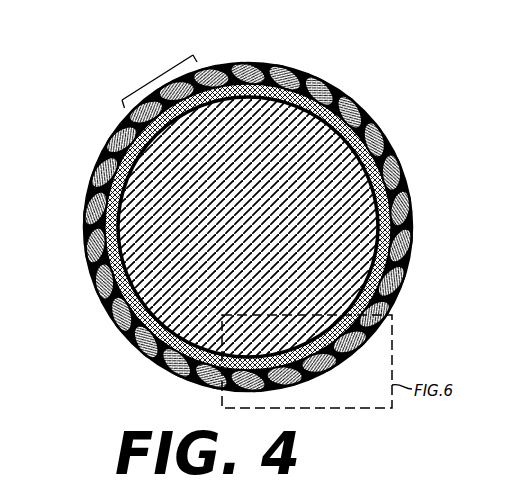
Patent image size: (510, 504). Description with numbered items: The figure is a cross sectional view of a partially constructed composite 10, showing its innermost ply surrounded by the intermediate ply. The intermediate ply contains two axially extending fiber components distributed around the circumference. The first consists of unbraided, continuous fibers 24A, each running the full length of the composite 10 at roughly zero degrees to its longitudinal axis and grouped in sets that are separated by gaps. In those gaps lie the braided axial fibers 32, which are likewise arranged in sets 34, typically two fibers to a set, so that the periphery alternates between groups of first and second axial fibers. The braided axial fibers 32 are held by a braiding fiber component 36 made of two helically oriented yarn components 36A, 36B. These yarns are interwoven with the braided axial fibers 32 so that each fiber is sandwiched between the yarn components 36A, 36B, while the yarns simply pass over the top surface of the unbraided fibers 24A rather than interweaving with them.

The composite 10 is at (303, 61).
The unbraided continuous fibers 24A is at (396, 157).
The braided axial fibers 32 is at (237, 229).
The sets 34 is at (158, 80).
The braiding fiber component 36 is at (404, 212).
The helically oriented yarn component 36A is at (318, 378).
The helically oriented yarn component 36B is at (350, 357).